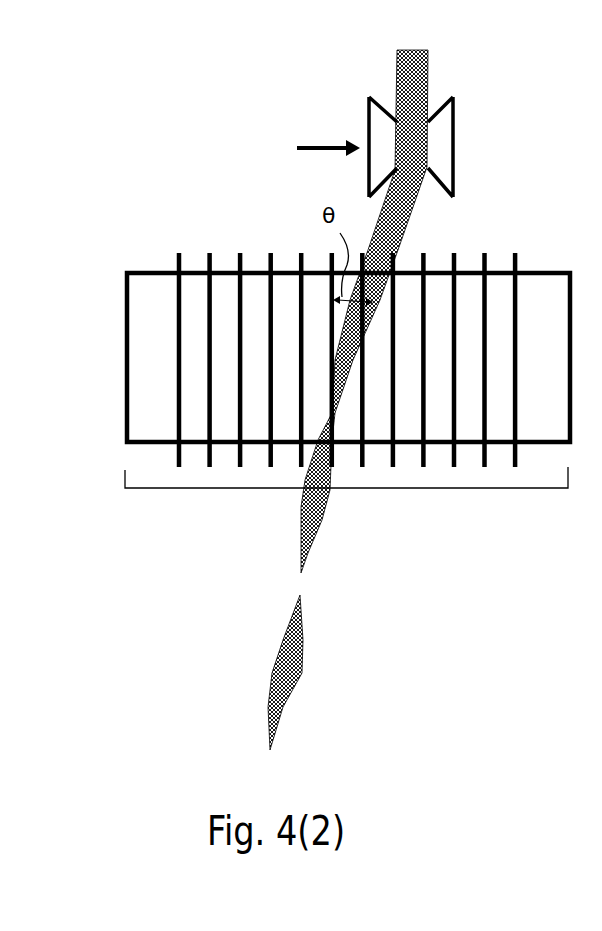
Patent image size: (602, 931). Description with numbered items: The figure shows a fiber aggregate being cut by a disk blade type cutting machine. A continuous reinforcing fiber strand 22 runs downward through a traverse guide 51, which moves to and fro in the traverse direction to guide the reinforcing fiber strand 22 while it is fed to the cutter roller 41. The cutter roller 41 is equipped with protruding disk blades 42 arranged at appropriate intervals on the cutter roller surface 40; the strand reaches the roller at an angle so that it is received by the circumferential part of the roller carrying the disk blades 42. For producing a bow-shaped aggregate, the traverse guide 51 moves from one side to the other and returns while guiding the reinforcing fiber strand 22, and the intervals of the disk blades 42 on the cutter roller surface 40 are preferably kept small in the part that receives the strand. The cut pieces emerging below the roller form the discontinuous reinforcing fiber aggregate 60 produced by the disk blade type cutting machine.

The continuous reinforcing fiber strand 22 is at (402, 64).
The traverse guide 51 is at (457, 145).
The cutter roller 41 is at (123, 358).
The disk blade 42 is at (453, 462).
The cutter roller surface 40 is at (273, 489).
The discontinuous reinforcing fiber aggregate 60 is at (298, 560).